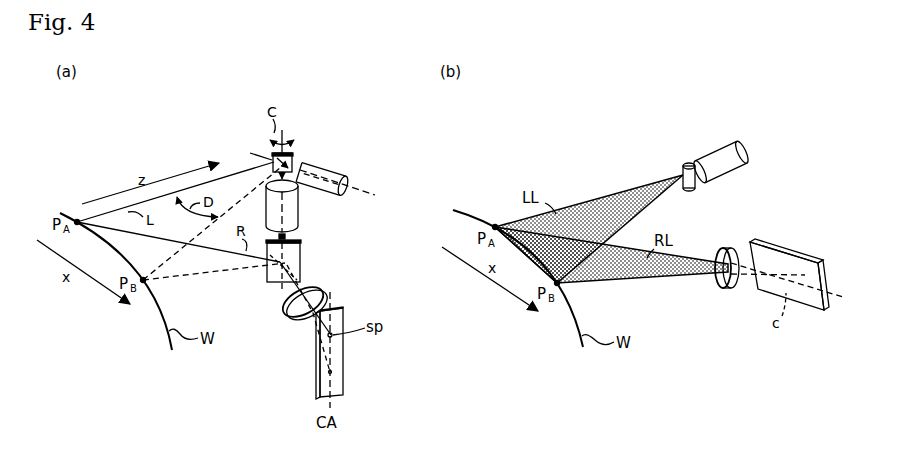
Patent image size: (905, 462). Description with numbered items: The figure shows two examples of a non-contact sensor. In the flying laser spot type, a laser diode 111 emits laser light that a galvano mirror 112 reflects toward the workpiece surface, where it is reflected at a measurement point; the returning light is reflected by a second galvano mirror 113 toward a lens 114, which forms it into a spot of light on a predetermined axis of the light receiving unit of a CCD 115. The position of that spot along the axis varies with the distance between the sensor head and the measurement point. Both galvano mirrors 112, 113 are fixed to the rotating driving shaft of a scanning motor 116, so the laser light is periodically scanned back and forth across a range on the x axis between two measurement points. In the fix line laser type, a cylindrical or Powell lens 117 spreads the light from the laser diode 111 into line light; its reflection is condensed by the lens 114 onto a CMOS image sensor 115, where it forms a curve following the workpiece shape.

The laser diode 111 is at (338, 167).
The galvano mirror 112 is at (293, 156).
The galvano mirror 113 is at (300, 255).
The lens 114 is at (283, 309).
The CCD 115 is at (344, 373).
The scanning motor 116 is at (299, 209).
The cylindrical lens 117 is at (685, 164).